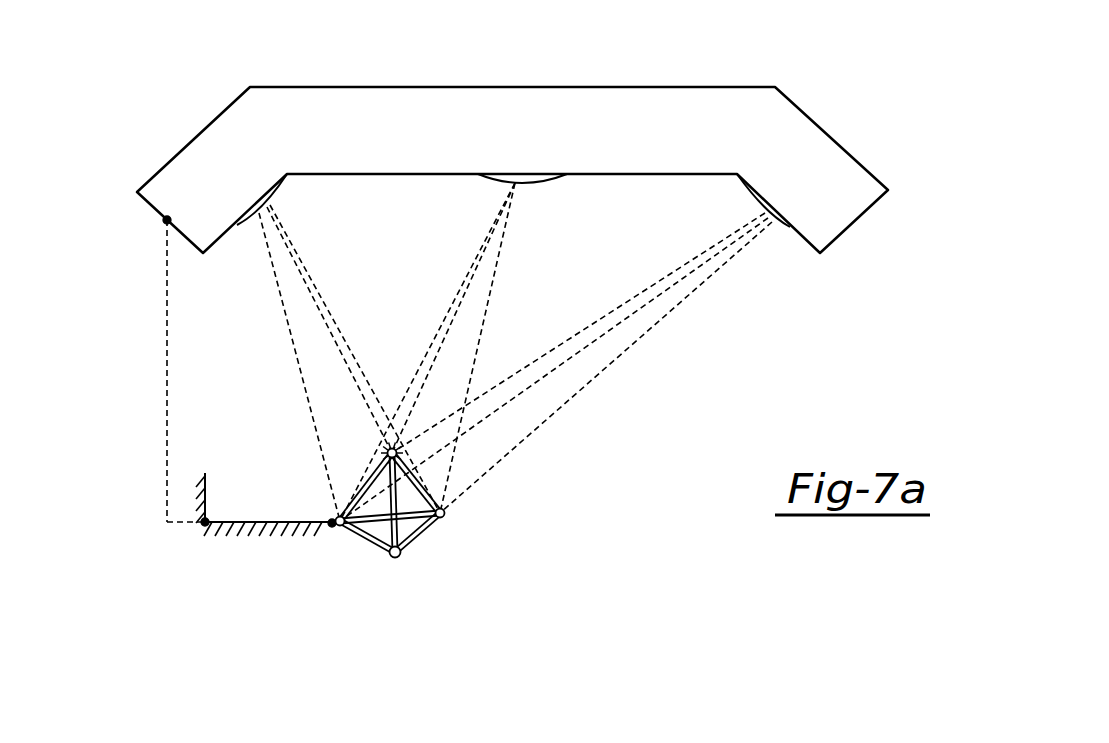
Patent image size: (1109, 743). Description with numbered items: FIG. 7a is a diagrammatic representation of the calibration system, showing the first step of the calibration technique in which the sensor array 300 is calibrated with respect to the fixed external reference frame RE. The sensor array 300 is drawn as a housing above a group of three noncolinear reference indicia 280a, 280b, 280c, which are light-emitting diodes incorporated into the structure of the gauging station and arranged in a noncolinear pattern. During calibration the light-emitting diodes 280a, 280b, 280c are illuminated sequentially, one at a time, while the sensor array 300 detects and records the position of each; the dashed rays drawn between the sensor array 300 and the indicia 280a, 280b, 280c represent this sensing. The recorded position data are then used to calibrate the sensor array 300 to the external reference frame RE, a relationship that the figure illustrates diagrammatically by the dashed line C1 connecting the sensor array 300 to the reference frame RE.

The sensor array 300 is at (612, 46).
The reference indicium 280a is at (388, 453).
The reference indicium 280b is at (338, 527).
The reference indicium 280c is at (515, 515).
The dashed line C1 is at (168, 393).
The external reference frame RE is at (205, 530).